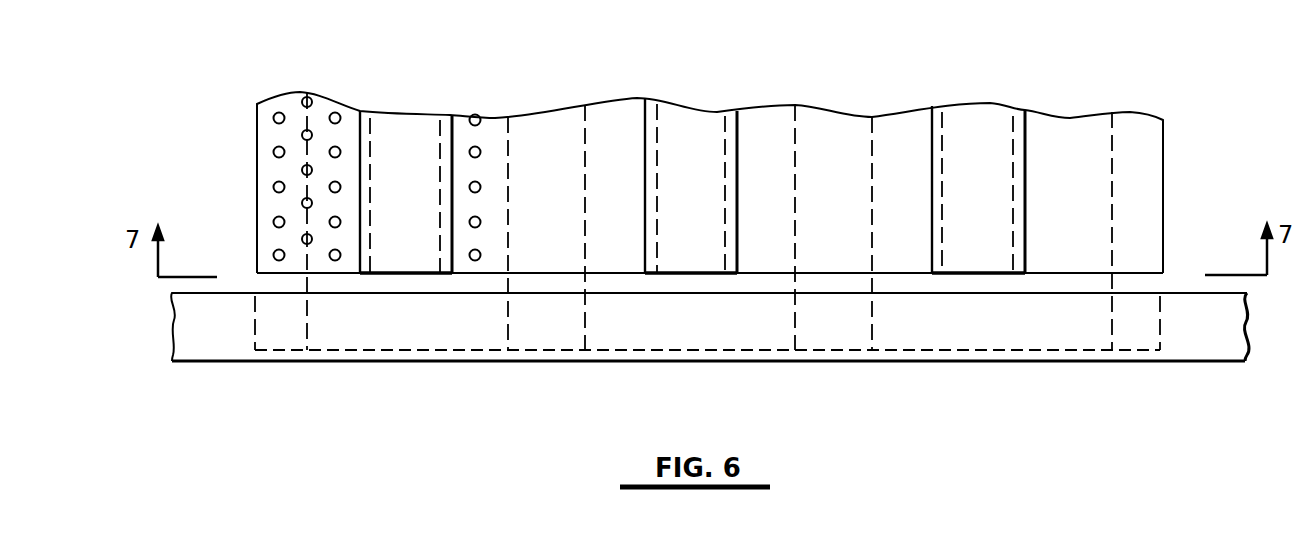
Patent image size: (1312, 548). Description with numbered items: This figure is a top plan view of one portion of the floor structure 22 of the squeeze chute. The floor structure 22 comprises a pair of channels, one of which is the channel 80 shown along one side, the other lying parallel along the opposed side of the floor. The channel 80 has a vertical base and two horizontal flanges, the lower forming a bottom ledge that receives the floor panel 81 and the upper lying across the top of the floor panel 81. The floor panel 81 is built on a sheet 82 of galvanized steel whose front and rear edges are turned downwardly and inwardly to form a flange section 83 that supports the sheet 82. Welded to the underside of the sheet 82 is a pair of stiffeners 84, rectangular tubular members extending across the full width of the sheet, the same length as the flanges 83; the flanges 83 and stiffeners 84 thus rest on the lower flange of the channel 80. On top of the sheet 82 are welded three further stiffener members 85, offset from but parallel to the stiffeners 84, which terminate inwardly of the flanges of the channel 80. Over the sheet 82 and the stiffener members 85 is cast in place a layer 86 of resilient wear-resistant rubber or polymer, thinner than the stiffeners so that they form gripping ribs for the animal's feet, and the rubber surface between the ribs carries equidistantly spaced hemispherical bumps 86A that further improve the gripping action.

The floor structure 22 is at (531, 369).
The channel 80 is at (230, 340).
The floor panel 81 is at (523, 109).
The sheet 82 is at (894, 280).
The flange section 83 is at (1130, 132).
The stiffeners 84 is at (830, 133).
The stiffener members 85 is at (392, 148).
The layer 86 is at (272, 173).
The hemispherical bumps 86A is at (273, 152).